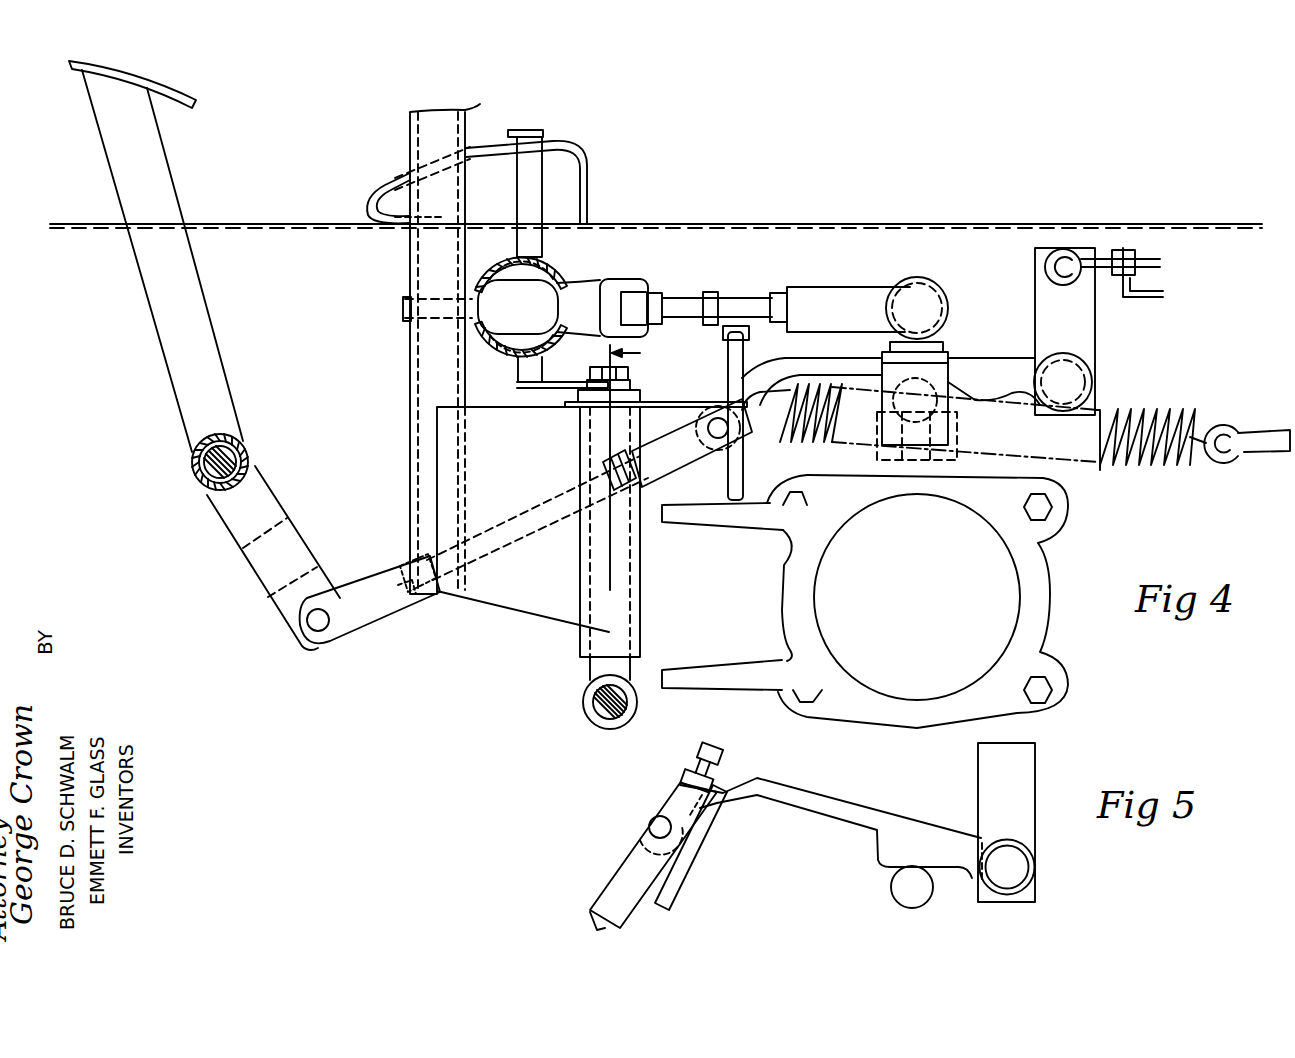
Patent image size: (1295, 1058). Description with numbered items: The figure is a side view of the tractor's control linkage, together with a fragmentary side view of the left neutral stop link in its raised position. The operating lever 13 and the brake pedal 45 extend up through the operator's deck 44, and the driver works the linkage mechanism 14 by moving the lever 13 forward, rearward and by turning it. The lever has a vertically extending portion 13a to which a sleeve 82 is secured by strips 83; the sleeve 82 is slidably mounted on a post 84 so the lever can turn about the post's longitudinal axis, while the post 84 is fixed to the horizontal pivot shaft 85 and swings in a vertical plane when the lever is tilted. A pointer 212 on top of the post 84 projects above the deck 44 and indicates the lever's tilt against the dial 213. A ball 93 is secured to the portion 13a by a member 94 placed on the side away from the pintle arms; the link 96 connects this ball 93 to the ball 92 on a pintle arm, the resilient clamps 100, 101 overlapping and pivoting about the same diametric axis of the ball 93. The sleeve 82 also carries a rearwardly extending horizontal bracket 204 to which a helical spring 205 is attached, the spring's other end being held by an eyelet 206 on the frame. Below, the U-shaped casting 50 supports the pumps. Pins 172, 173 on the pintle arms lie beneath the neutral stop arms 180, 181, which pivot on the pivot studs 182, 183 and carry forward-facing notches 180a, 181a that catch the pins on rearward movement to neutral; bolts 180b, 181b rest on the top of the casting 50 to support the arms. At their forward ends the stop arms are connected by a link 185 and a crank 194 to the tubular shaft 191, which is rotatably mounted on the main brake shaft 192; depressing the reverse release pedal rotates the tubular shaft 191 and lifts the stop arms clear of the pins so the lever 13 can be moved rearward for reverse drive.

In FIG. 4, the operating lever 13 is at (481, 107).
In FIG. 4, the vertically extending portion 13a is at (408, 140).
In FIG. 4, the linkage mechanism 14 is at (683, 252).
In FIG. 4, the operator's deck 44 is at (928, 224).
In FIG. 4, the brake pedal 45 is at (165, 190).
In FIG. 4, the U-shaped casting 50 is at (1045, 572).
In FIG. 4, the sleeve 82 is at (640, 582).
In FIG. 4, the strips 83 is at (520, 600).
In FIG. 4, the post 84 is at (588, 665).
In FIG. 4, the horizontal pivot shaft 85 is at (612, 732).
In FIG. 4, the ball 92 is at (932, 287).
In FIG. 4, the ball 93 is at (545, 300).
In FIG. 4, the member 94 is at (403, 306).
In FIG. 4, the link 96 is at (679, 303).
In FIG. 4, the resilient clamp 100 is at (500, 278).
In FIG. 4, the resilient clamp 101 is at (614, 280).
In FIG. 5, the pin 172 is at (902, 892).
In FIG. 4, the pin 173 is at (935, 404).
In FIG. 5, the neutral stop arm 180 is at (896, 822).
In FIG. 5, the notch 180a is at (876, 835).
In FIG. 5, the bolt 180b is at (678, 881).
In FIG. 4, the neutral stop arm 181 is at (1012, 364).
In FIG. 4, the notch 181a is at (915, 388).
In FIG. 4, the bolt 181b is at (744, 350).
In FIG. 5, the pivot stud 182 is at (1020, 860).
In FIG. 4, the pivot stud 183 is at (1075, 376).
In FIG. 4, the link 185 is at (338, 582).
In FIG. 5, the link 185 is at (627, 864).
In FIG. 4, the tubular shaft 191 is at (195, 473).
In FIG. 4, the main brake shaft 192 is at (240, 458).
In FIG. 4, the crank 194 is at (295, 520).
In FIG. 4, the horizontal bracket 204 is at (657, 388).
In FIG. 4, the helical spring 205 is at (1135, 465).
In FIG. 4, the eyelet 206 is at (1268, 402).
In FIG. 4, the pointer 212 is at (540, 213).
In FIG. 4, the dial 213 is at (590, 170).